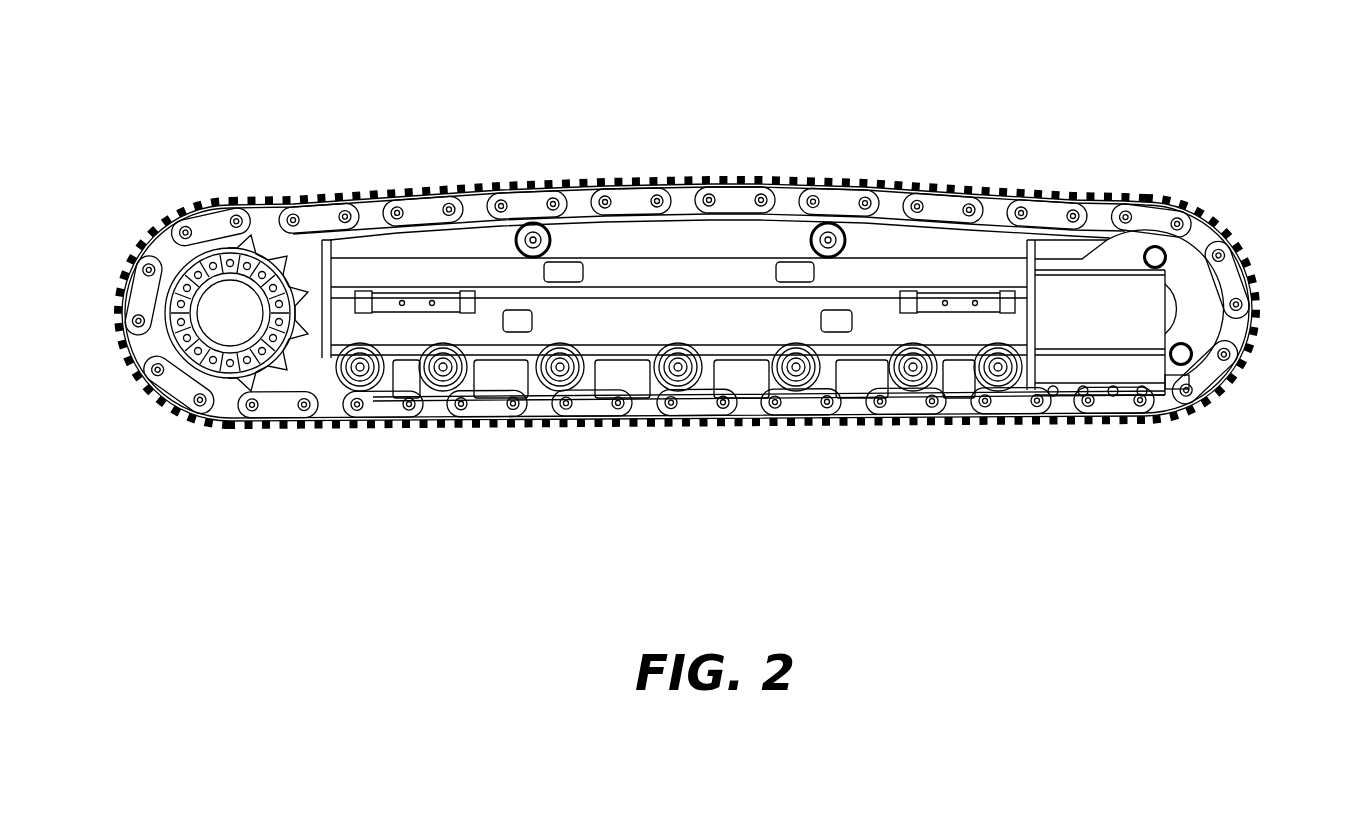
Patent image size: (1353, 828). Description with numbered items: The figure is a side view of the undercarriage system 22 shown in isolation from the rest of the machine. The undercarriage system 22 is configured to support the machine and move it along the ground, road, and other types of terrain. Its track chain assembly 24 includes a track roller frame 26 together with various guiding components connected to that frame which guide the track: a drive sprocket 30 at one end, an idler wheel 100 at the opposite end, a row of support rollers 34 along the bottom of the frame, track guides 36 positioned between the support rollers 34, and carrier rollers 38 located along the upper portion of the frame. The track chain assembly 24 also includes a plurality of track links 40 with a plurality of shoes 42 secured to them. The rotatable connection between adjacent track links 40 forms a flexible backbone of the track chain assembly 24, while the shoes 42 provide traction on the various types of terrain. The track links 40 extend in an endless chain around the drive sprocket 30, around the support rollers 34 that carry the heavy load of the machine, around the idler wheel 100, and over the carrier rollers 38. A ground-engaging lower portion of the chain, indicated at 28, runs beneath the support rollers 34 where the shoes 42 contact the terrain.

The undercarriage system 22 is at (1068, 167).
The track chain assembly 24 is at (1138, 428).
The track roller frame 26 is at (588, 312).
The ground engaging track section 28 is at (633, 428).
The drive sprocket 30 is at (230, 313).
The support rollers 34 is at (363, 378).
The track guides 36 is at (502, 380).
The carrier rollers 38 is at (533, 223).
The track links 40 is at (236, 210).
The shoes 42 is at (1214, 236).
The idler wheel 100 is at (1193, 328).